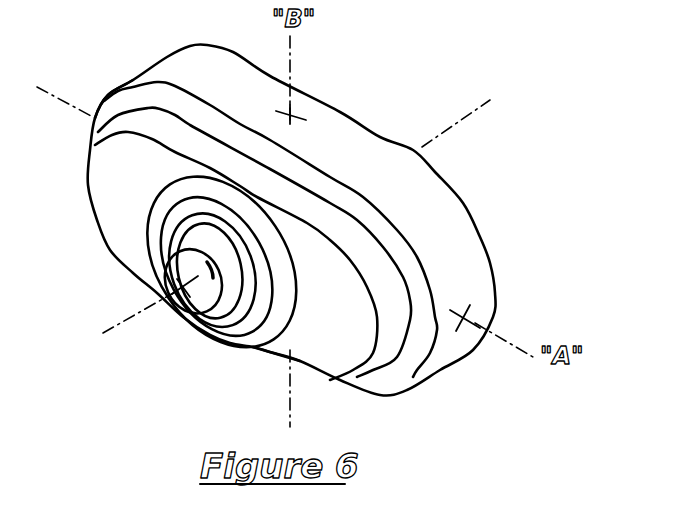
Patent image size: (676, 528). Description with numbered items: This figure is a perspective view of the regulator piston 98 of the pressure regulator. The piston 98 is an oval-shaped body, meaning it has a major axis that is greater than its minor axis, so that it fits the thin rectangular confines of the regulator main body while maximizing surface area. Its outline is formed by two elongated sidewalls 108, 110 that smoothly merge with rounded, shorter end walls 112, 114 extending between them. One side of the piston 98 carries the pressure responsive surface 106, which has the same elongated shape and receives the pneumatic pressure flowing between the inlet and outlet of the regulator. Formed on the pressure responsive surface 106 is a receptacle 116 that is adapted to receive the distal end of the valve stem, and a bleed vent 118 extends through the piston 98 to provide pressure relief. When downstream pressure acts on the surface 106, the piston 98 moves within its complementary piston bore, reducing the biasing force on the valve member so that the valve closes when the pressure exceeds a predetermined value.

The regulator piston 98 is at (439, 168).
The pressure responsive surface 106 is at (355, 340).
The elongated sidewall 108 is at (365, 122).
The elongated sidewall 110 is at (273, 352).
The end wall 112 is at (494, 273).
The end wall 114 is at (112, 92).
The receptacle 116 is at (150, 262).
The bleed vent 118 is at (181, 312).